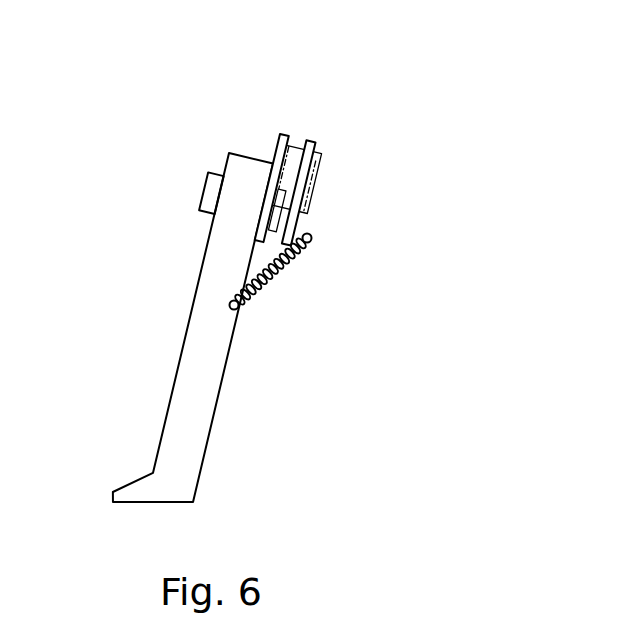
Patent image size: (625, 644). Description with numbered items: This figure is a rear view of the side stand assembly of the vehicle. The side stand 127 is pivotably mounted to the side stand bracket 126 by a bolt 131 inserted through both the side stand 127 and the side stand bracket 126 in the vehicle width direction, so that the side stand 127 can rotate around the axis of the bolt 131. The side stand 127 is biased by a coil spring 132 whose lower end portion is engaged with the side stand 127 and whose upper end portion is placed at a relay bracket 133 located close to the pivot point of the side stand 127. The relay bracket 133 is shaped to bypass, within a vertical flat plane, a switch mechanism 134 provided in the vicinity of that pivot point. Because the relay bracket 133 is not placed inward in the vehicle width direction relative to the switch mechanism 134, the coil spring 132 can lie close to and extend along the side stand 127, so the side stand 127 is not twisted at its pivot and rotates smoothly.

The side stand bracket 126 is at (278, 138).
The side stand 127 is at (202, 322).
The bolt 131 is at (203, 192).
The coil spring 132 is at (282, 277).
The relay bracket 133 is at (310, 140).
The switch mechanism 134 is at (318, 174).